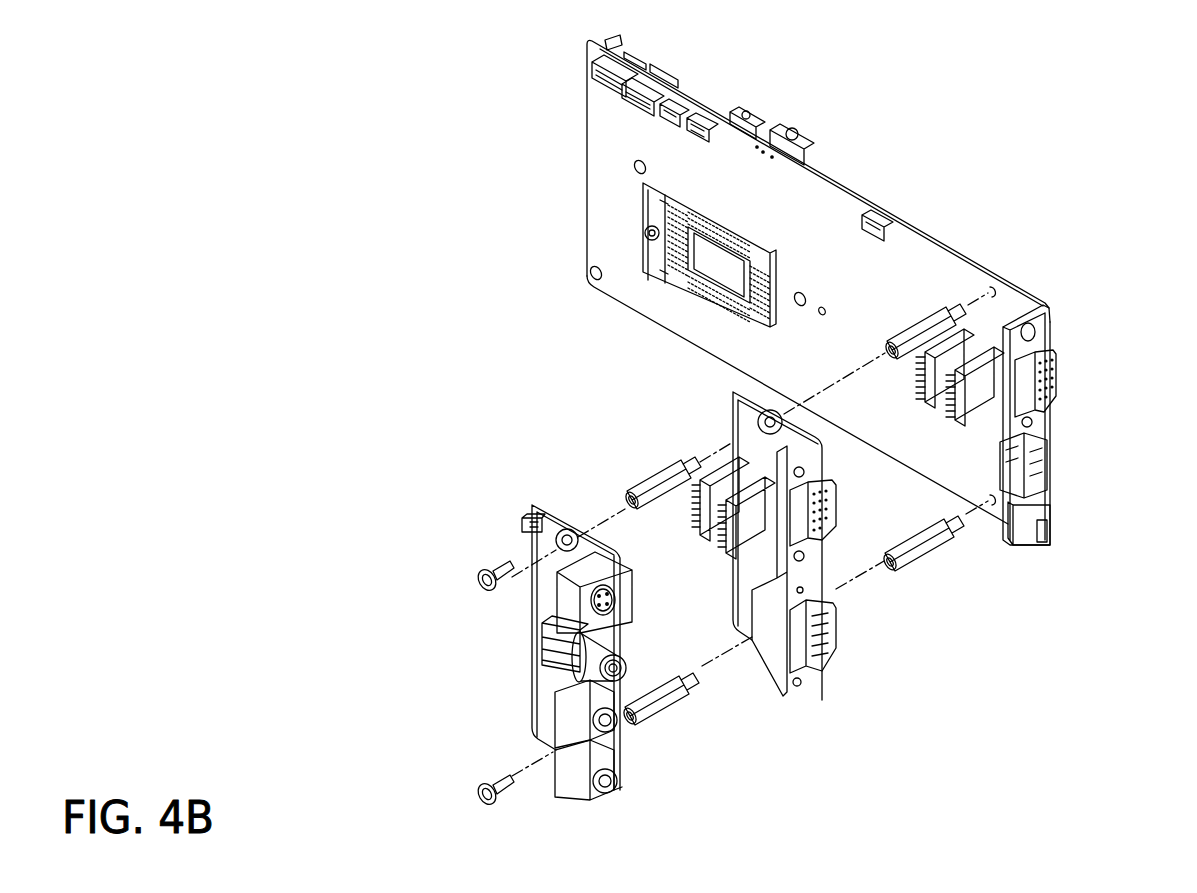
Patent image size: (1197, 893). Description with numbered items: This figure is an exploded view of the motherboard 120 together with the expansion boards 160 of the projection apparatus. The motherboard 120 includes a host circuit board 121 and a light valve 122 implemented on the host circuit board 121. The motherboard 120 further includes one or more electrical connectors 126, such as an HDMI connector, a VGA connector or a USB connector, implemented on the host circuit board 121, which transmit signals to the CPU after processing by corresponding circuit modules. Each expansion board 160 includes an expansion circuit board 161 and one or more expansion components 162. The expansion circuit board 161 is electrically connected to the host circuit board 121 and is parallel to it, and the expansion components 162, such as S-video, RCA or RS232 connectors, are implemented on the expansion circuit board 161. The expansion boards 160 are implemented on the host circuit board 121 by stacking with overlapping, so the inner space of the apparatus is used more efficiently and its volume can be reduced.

The motherboard 120 is at (1099, 445).
The host circuit board 121 is at (947, 246).
The light valve 122 is at (727, 270).
The electrical connector 126 is at (1040, 335).
The expansion board 160 is at (848, 699).
The expansion circuit board 161 is at (745, 586).
The expansion component 162 is at (790, 676).